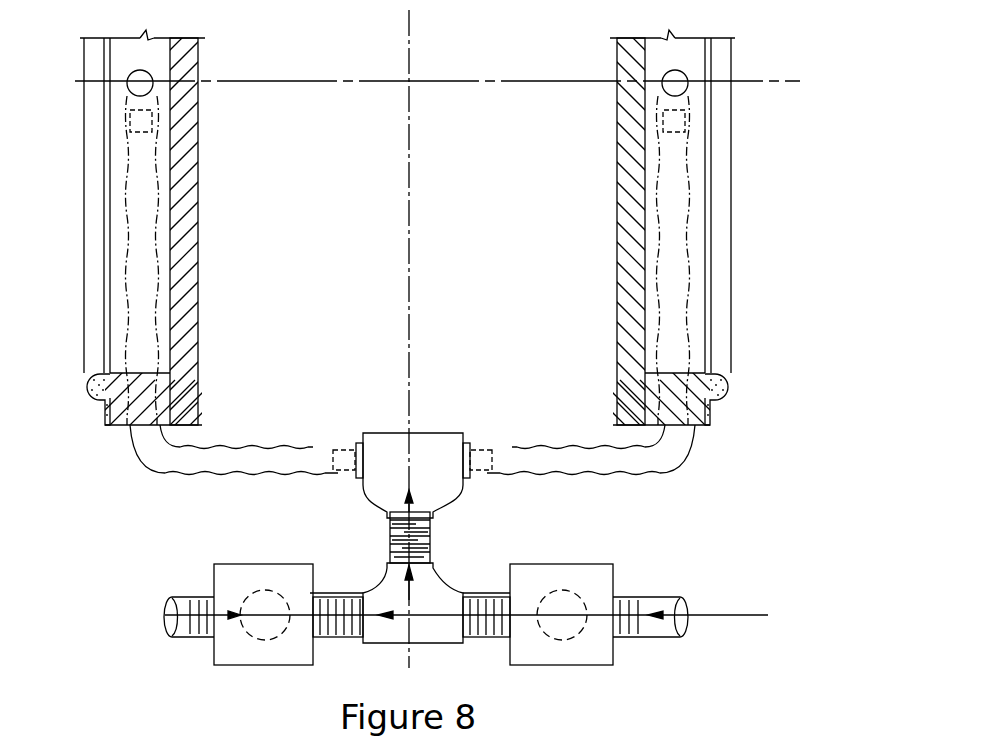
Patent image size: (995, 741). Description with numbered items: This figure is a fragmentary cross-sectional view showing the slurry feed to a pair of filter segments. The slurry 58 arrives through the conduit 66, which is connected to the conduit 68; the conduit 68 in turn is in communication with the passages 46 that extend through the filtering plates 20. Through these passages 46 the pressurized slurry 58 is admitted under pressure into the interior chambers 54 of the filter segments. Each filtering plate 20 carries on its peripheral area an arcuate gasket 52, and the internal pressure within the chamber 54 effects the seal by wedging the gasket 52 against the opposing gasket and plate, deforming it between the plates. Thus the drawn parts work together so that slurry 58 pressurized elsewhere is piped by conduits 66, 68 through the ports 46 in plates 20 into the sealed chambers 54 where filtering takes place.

The filtering plate 20 is at (195, 391).
The passage 46 is at (149, 77).
The arcuate gasket 52 is at (90, 391).
The chamber 54 is at (112, 193).
The slurry 58 is at (412, 735).
The conduit 66 is at (667, 597).
The conduit 68 is at (572, 460).